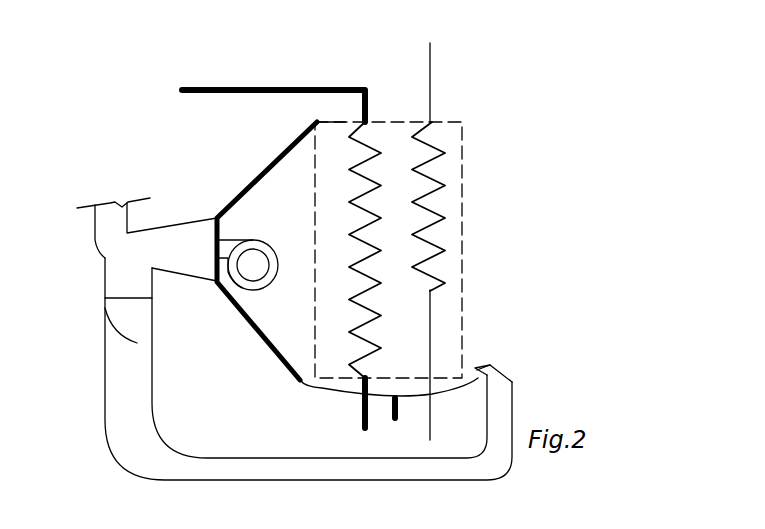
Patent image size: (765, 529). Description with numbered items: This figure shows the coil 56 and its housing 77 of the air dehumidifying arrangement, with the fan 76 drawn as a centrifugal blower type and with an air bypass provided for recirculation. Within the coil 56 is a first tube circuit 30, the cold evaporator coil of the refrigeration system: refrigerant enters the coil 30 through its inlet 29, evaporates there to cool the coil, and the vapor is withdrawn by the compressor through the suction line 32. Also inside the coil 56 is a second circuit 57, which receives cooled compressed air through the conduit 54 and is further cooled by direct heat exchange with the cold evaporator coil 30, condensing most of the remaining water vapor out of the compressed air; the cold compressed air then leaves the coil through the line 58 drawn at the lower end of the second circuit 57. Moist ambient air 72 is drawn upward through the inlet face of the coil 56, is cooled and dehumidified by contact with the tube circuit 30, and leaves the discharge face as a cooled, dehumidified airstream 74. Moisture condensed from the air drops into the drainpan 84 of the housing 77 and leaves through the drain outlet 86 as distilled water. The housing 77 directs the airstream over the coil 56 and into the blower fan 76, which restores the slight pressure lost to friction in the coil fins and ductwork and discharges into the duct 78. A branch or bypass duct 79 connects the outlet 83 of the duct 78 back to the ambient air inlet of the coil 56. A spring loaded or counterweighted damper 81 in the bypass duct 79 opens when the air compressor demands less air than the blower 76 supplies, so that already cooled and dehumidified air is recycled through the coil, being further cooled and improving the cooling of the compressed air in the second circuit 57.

The inlet 29 is at (362, 405).
The first tube circuit 30 is at (378, 147).
The suction line 32 is at (238, 93).
The conduit 54 is at (433, 78).
The coil 56 is at (316, 178).
The second circuit 57 is at (460, 147).
The outlet line 58 is at (432, 412).
The moist ambient air 72 is at (445, 173).
The cooled, dehumidified airstream 74 is at (320, 192).
The blower fan 76 is at (220, 285).
The housing 77 is at (247, 187).
The duct 78 is at (96, 217).
The bypass duct 79 is at (260, 457).
The damper 81 is at (118, 303).
The outlet 83 is at (512, 380).
The drainpan 84 is at (333, 391).
The drain outlet 86 is at (396, 416).